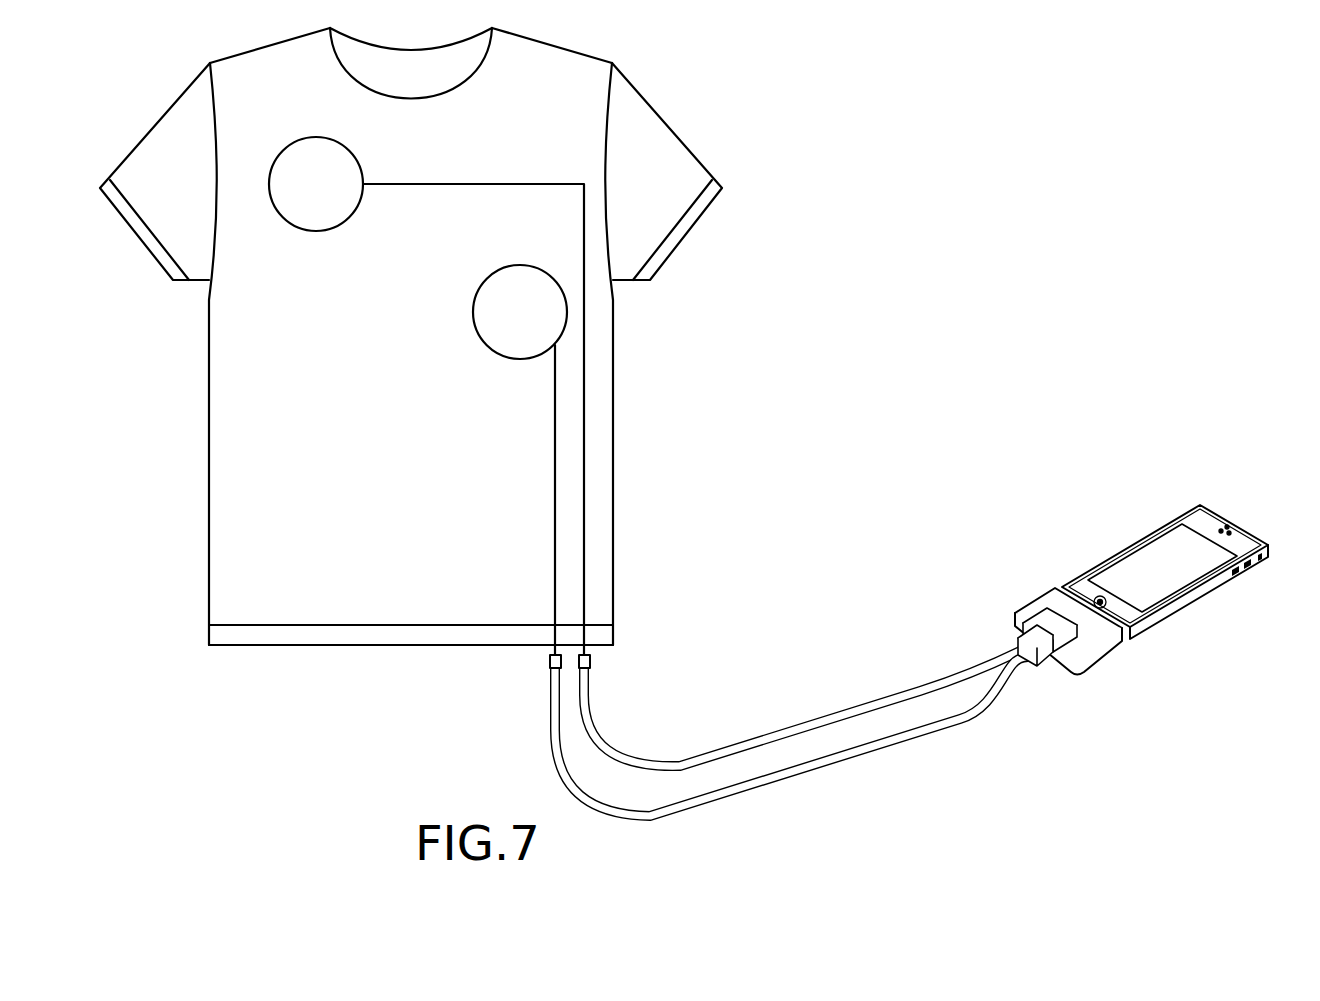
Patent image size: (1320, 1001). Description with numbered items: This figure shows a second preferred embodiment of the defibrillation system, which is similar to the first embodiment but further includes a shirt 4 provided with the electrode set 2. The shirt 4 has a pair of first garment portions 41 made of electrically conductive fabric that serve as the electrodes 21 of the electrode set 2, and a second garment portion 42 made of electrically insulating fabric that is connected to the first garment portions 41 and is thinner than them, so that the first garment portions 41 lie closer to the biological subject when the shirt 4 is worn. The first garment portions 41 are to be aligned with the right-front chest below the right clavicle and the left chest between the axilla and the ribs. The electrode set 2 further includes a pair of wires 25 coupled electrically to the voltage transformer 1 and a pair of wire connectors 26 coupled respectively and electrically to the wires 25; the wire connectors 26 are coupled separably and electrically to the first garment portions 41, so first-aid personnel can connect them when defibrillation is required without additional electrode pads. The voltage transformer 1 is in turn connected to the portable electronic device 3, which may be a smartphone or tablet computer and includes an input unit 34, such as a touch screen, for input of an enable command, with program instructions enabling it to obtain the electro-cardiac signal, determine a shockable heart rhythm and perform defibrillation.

The voltage transformer 1 is at (1105, 653).
The electrode set 2 is at (928, 735).
The portable electronic device 3 is at (1191, 606).
The shirt 4 is at (445, 380).
The electrodes 21 is at (269, 184).
The wires 25 is at (852, 752).
The wire connectors 26 is at (550, 661).
The input unit 34 is at (1165, 600).
The first garment portions 41 is at (309, 268).
The second garment portion 42 is at (317, 593).